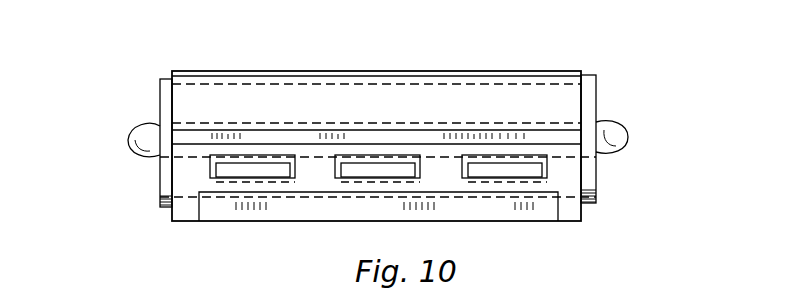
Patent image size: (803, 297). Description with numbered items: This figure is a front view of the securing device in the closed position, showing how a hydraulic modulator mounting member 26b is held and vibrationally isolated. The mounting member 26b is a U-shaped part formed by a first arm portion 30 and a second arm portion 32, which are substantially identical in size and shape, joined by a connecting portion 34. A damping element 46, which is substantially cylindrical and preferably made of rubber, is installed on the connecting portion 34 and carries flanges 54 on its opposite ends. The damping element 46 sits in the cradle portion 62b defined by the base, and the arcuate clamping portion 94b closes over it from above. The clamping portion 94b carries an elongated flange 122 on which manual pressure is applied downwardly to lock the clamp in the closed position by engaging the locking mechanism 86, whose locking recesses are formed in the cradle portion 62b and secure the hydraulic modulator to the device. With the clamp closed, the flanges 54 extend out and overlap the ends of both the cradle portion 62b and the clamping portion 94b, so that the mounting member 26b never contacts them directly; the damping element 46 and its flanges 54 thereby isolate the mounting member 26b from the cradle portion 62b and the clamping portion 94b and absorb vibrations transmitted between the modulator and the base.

The clamping portion 94b is at (508, 71).
The cradle portion 62b is at (577, 208).
The flange 54 is at (160, 86).
The second arm portion 32 is at (128, 133).
The first arm portion 30 is at (623, 133).
The mounting member 26b is at (137, 160).
The locking mechanism 86 is at (369, 163).
The connecting portion 34 is at (262, 122).
The damping element 46 is at (428, 86).
The flange 122 is at (562, 136).